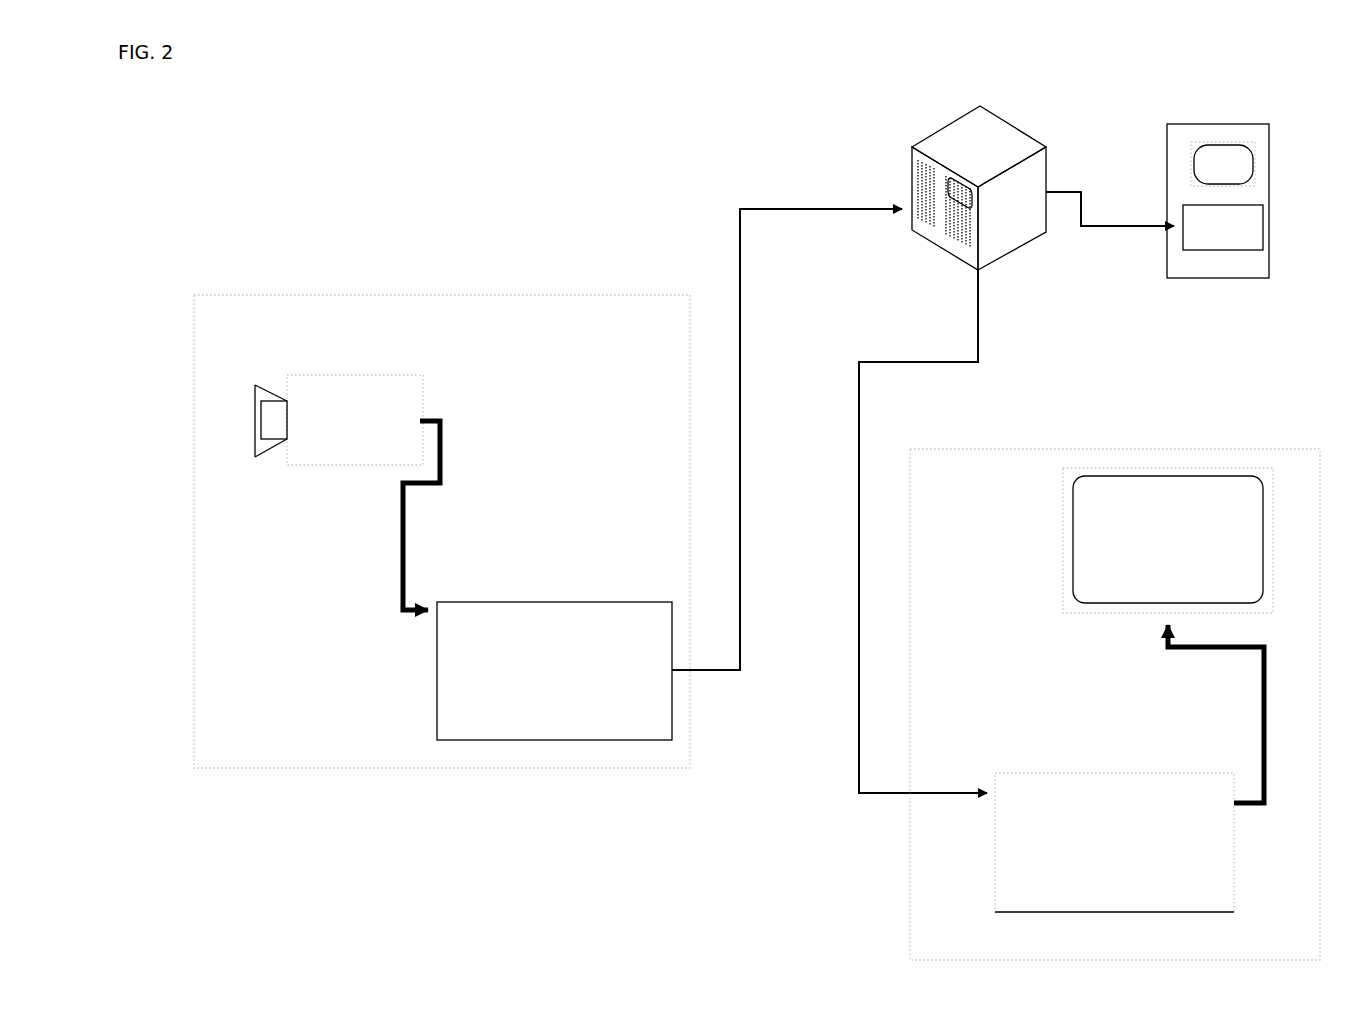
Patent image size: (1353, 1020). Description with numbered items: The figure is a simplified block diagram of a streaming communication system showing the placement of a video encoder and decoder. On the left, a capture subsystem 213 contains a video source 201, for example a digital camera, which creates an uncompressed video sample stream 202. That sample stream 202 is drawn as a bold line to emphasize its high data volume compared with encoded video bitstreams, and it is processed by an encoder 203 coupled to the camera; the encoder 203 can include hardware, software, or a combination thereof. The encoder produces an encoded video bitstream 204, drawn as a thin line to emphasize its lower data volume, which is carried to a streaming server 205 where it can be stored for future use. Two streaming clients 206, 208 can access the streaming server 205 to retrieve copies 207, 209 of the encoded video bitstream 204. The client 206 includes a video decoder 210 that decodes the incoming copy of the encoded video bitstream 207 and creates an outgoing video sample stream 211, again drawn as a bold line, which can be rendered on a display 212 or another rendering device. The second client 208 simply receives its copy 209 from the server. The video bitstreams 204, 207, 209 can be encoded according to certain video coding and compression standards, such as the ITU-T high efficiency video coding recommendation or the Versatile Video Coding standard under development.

The video source 201 is at (357, 375).
The uncompressed video sample stream 202 is at (398, 556).
The encoder 203 is at (568, 602).
The encoded video bitstream 204 is at (738, 243).
The streaming server 205 is at (910, 180).
The streaming client 206 is at (910, 943).
The copy of the encoded video bitstream 207 is at (859, 607).
The streaming client 208 is at (1268, 176).
The copy of the encoded video bitstream 209 is at (1098, 228).
The video decoder 210 is at (995, 885).
The outgoing video sample stream 211 is at (1262, 706).
The display 212 is at (1063, 540).
The capture subsystem 213 is at (347, 768).